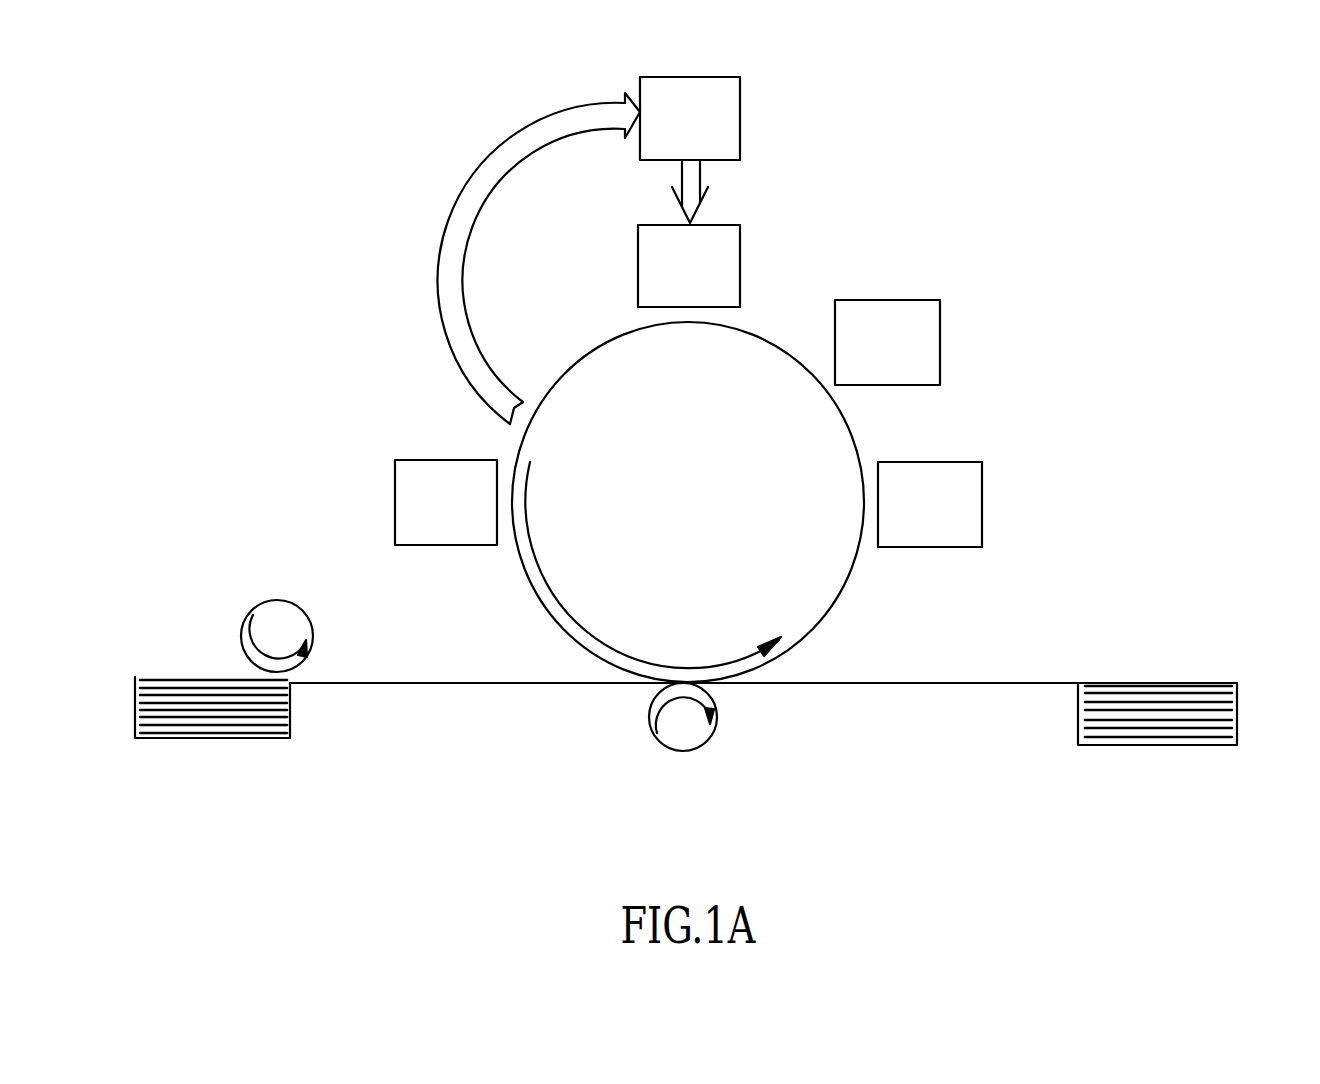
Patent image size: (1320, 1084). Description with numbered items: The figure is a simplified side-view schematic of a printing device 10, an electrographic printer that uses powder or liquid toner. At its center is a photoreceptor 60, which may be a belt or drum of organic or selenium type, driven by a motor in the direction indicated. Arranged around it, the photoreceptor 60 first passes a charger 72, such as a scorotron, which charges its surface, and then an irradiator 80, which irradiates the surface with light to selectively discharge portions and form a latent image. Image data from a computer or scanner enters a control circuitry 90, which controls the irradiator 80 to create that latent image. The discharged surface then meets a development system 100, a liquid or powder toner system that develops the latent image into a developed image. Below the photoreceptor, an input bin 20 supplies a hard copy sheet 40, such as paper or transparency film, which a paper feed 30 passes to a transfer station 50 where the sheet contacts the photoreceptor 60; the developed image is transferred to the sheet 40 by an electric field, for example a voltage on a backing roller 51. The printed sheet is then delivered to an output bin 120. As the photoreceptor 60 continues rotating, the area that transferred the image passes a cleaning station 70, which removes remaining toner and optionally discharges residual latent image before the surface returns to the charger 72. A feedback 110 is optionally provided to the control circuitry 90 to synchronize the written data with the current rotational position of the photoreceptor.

The printing device 10 is at (1127, 145).
The input bin 20 is at (168, 740).
The paper feed 30 is at (294, 649).
The hard copy sheet 40 is at (530, 692).
The transfer station 50 is at (722, 692).
The backing roller 51 is at (668, 736).
The photoreceptor 60 is at (671, 515).
The cleaning station 70 is at (913, 517).
The charger 72 is at (870, 355).
The irradiator 80 is at (672, 279).
The control circuitry 90 is at (673, 131).
The development system 100 is at (421, 515).
The feedback 110 is at (437, 289).
The output bin 120 is at (1113, 748).